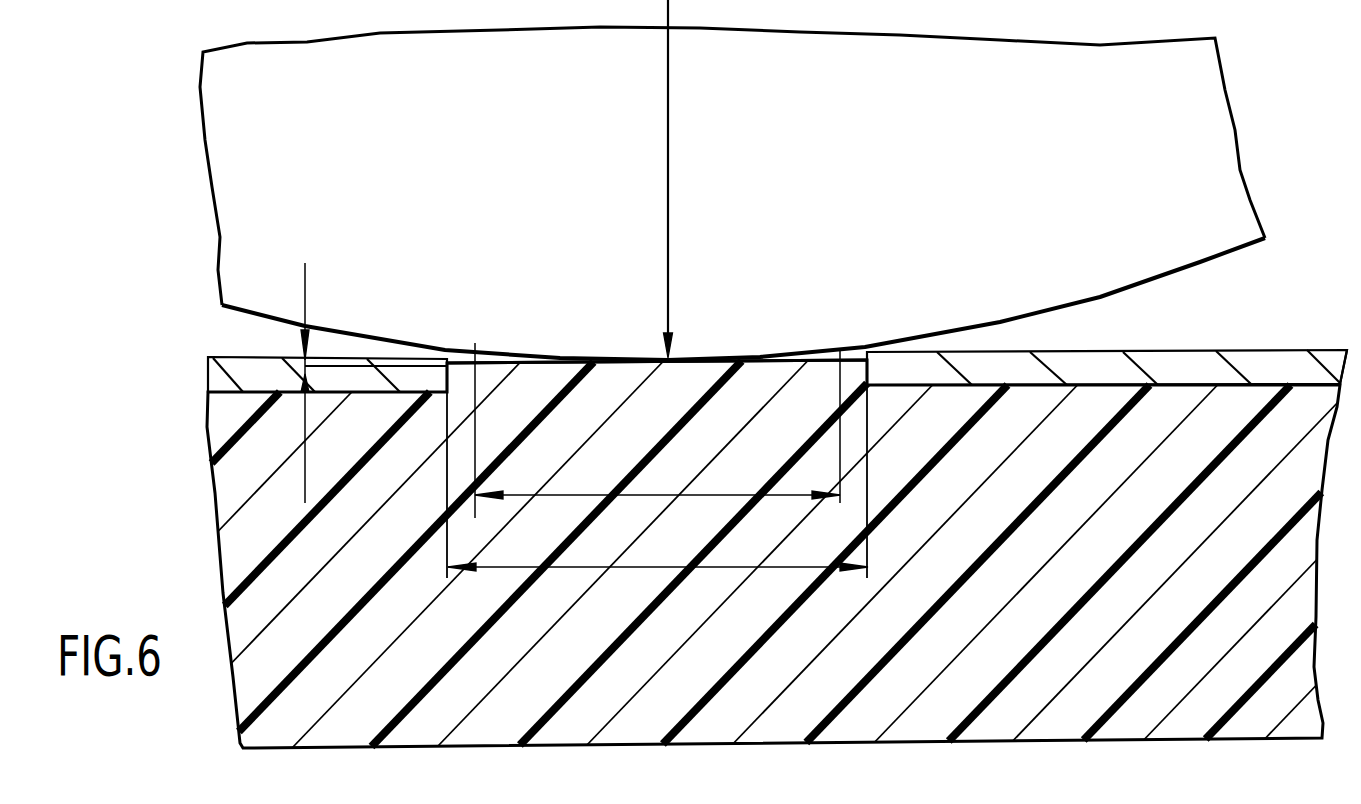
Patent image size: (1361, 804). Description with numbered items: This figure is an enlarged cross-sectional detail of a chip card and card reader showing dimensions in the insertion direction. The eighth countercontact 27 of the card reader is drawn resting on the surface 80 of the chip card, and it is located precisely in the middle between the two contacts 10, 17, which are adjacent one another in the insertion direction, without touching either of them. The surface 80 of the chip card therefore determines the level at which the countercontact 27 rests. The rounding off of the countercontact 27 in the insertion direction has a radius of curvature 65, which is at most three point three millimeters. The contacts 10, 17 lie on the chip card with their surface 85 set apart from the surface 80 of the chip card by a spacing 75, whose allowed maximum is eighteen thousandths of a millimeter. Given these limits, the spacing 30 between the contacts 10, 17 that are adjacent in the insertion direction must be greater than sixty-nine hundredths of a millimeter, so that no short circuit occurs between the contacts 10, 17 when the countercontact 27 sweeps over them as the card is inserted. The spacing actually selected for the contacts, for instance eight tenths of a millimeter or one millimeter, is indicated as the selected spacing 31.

The contact 10 is at (218, 381).
The contact 17 is at (1303, 348).
The eighth countercontact 27 is at (1230, 245).
The spacing between adjacent contacts 30 is at (635, 495).
The selected spacing 31 is at (642, 567).
The radius of curvature 65 is at (667, 162).
The spacing 75 is at (313, 362).
The surface of the chip card 80 is at (787, 357).
The surface of the contacts 85 is at (228, 357).